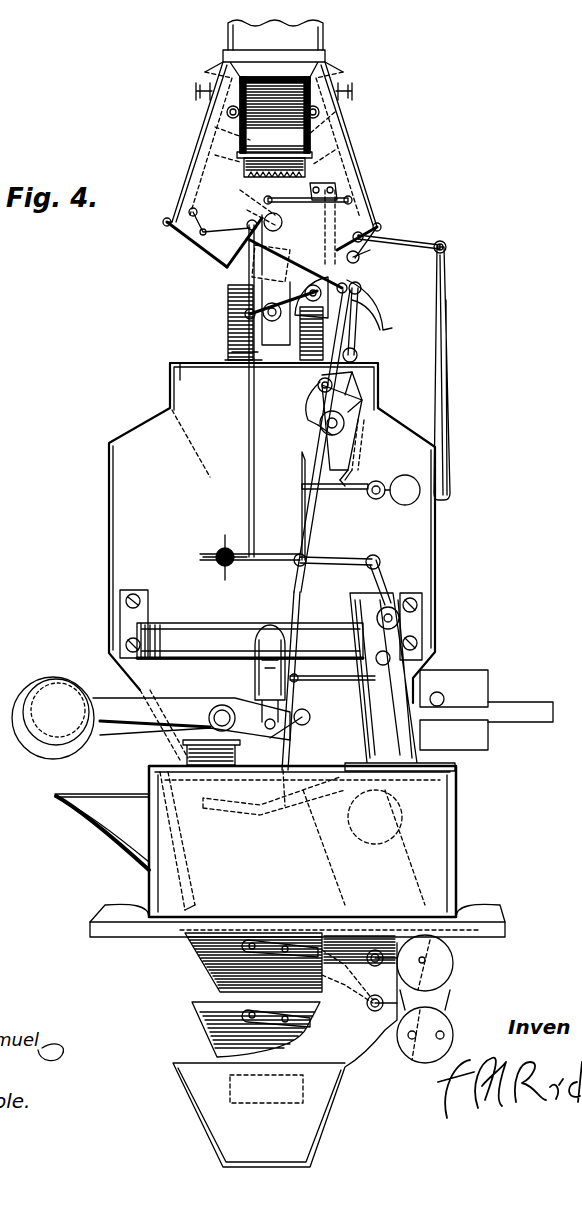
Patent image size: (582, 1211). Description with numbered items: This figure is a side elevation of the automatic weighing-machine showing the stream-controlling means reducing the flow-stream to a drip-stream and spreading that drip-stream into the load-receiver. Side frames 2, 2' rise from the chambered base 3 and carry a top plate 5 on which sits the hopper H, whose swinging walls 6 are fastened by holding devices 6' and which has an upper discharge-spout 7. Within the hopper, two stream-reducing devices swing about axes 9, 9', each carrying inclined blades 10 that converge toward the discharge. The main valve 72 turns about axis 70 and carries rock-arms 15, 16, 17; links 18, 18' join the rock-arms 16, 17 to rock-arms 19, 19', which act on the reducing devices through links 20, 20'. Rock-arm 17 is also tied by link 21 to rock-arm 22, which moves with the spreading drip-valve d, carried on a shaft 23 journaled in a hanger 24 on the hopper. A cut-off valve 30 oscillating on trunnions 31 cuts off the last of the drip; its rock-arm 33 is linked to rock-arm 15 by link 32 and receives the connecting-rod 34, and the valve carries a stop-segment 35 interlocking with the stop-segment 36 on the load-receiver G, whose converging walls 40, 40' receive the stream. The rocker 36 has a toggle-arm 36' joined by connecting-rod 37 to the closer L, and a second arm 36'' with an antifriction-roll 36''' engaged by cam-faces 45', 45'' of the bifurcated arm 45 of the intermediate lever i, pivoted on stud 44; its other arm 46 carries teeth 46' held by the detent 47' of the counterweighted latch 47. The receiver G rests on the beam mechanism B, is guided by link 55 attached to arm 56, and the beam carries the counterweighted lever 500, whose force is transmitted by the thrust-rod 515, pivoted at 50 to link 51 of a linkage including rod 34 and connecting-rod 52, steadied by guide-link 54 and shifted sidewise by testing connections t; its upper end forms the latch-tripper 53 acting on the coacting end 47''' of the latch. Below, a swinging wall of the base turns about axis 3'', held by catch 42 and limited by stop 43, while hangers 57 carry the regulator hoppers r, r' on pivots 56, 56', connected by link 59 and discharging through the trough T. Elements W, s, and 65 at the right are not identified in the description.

The top plate 5 is at (278, 76).
The swinging walls 6 is at (268, 148).
The holding devices 6' is at (271, 91).
The upper discharge-spout 7 is at (215, 78).
The axis of oscillation 9 is at (317, 103).
The axis of oscillation 9' is at (227, 103).
The stream-reducing members 10 is at (335, 130).
The axis of movement of main valve 70 is at (290, 142).
The rock-arm 15 is at (245, 200).
The rock-arm 16 is at (300, 192).
The rock-arm 17 is at (240, 248).
The link 18 is at (362, 209).
The link 18' is at (214, 242).
The rock-arm 19 is at (375, 221).
The rock-arm 19' is at (187, 242).
The link 20 is at (334, 185).
The link 20' is at (219, 219).
The link 21 is at (350, 262).
The rock-arm 22 is at (348, 286).
The shaft 23 is at (271, 256).
The hanger 24 is at (370, 226).
The main valve 72 is at (240, 275).
The link 32 is at (235, 300).
The cut-off valve 30 is at (245, 318).
The trunnions 31 is at (272, 322).
The rock-arm 33 is at (235, 352).
The stop-segment 35 is at (360, 297).
The stop-segment 36 is at (383, 306).
The toggle-arm 36' is at (380, 315).
The arm of rocker 36'' is at (365, 379).
The antifriction-roll 36''' is at (296, 403).
The guide-link 55 is at (425, 247).
The projecting arm 56 is at (453, 370).
The pivot 56' is at (371, 984).
The lever-arm 45 is at (303, 421).
The cam-face 45' is at (376, 392).
The cam-face 45'' is at (316, 382).
The stud 44 is at (345, 420).
The converging walls 40 is at (179, 443).
The slot 40' is at (375, 445).
The arm of intermediate lever 46 is at (364, 462).
The stop-faces 46' is at (364, 473).
The latch-tripper 53 is at (302, 478).
The latch 47 is at (393, 500).
The detent 47' is at (348, 492).
The bar 47''' is at (316, 496).
The connecting-rod 37 is at (338, 525).
The pivot 50 is at (298, 555).
The guide-link 54 is at (255, 562).
The link 51 is at (348, 565).
The connecting-rod 52 is at (385, 580).
The thrust-rod 515 is at (296, 598).
The side frame 2 is at (271, 625).
The side frame 2' is at (197, 376).
The connecting-rod 34 is at (249, 405).
The counterweighted lever 500 is at (140, 697).
The pin 65 is at (442, 695).
The catch 42 is at (150, 780).
The stop 43 is at (175, 785).
The chambered base 3 is at (297, 851).
The axis of swinging wall 3'' is at (172, 908).
The hanger 57 is at (315, 975).
The link 59 is at (448, 995).
The hopper H is at (273, 144).
The load-receiver G is at (272, 561).
The drip-valve d is at (306, 318).
The intermediate lever i is at (320, 423).
The beam mechanism B is at (128, 732).
The testing connections t is at (350, 678).
The block W is at (490, 682).
The rod s is at (553, 712).
The load-discharger L is at (274, 797).
The regulating member r is at (283, 962).
The regulating member r' is at (245, 1029).
The discharge trough T is at (285, 1055).